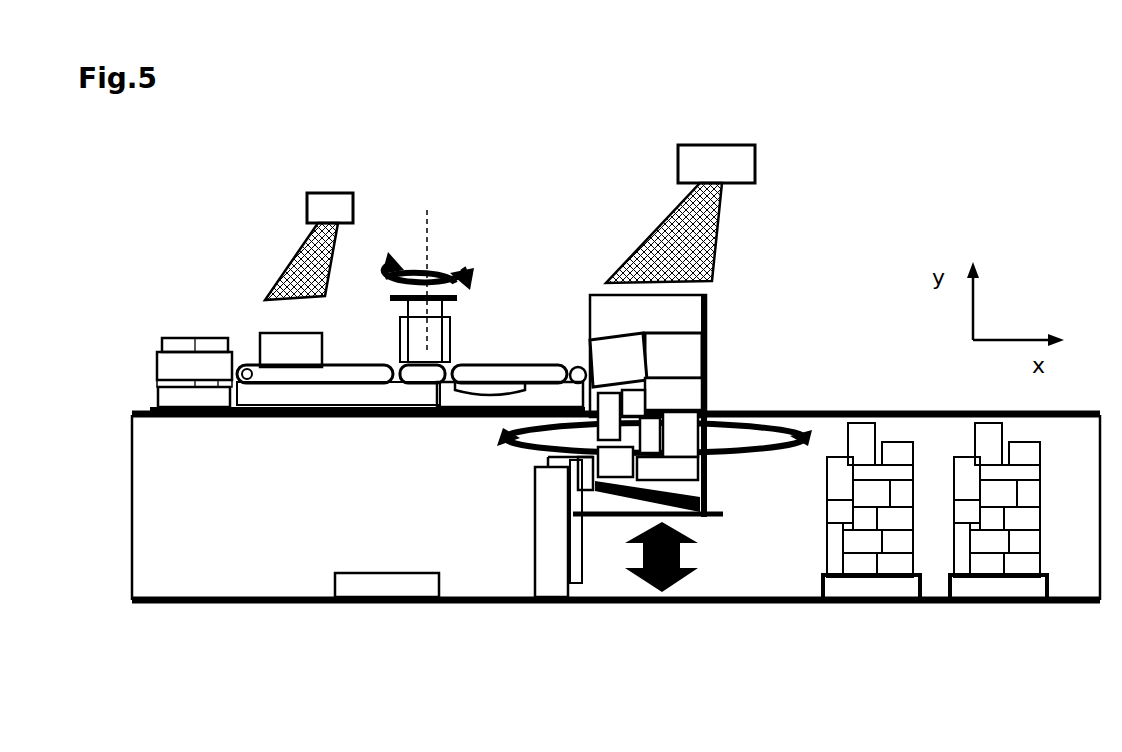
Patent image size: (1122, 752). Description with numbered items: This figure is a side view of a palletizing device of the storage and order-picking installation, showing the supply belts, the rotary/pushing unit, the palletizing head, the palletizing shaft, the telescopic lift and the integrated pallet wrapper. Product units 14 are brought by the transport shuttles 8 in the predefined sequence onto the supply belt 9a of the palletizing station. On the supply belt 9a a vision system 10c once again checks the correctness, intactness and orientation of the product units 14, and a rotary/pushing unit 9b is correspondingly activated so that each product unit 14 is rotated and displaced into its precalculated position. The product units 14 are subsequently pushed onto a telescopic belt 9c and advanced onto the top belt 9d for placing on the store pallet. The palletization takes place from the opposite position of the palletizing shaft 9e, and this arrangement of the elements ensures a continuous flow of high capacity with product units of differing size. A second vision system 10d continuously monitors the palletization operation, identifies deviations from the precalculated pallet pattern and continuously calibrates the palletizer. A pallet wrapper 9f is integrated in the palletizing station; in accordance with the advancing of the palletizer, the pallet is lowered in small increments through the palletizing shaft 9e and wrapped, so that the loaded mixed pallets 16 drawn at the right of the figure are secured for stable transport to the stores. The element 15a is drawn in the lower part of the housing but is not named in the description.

The transport shuttle 8 is at (192, 365).
The supply belt 9a is at (251, 373).
The rotary/pushing unit 9b is at (432, 305).
The telescopic belt 9c is at (517, 373).
The top belt 9d is at (622, 372).
The palletizing shaft 9e is at (713, 347).
The pallet wrapper 9f is at (743, 457).
The vision system 10c is at (330, 205).
The vision system 10d is at (720, 160).
The product unit 14 is at (177, 345).
The drive unit 15a is at (387, 588).
The mixed pallet 16 is at (860, 580).